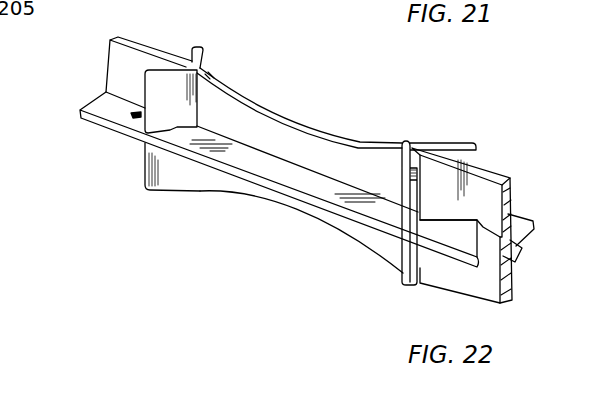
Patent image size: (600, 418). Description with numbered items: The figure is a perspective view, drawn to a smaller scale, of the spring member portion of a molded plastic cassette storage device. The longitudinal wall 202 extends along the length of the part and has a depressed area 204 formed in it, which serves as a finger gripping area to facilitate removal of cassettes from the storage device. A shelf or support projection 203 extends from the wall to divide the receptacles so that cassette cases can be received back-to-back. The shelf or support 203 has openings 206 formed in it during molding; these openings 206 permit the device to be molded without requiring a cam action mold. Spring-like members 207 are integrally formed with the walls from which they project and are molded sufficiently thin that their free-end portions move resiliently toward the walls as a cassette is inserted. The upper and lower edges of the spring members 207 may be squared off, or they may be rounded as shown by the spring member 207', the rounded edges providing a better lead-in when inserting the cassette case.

The longitudinal wall 202 is at (138, 45).
The shelf or support projection 203 is at (105, 103).
The depressed area 204 is at (297, 130).
The openings 206 is at (134, 125).
The spring-like members 207 is at (334, 149).
The spring member 207' is at (166, 157).